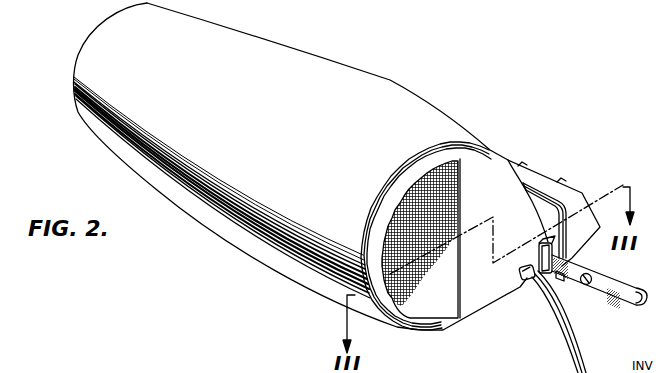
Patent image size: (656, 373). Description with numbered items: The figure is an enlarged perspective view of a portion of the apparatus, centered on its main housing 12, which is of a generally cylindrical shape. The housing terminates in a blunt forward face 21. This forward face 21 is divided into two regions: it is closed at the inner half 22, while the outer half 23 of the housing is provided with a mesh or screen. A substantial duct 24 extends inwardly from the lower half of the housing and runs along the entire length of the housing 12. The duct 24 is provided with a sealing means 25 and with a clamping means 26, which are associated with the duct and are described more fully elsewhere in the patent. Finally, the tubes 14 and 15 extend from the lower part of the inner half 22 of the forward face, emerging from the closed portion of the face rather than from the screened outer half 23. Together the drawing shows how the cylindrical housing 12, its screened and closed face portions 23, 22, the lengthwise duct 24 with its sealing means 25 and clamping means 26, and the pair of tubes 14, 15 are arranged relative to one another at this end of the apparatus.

The main housing 12 is at (312, 57).
The tube 14 is at (568, 312).
The tube 15 is at (556, 314).
The blunt forward face 21 is at (475, 293).
The inner half 22 is at (493, 206).
The outer half 23 is at (438, 291).
The duct 24 is at (571, 203).
The sealing means 25 is at (540, 193).
The clamping means 26 is at (608, 286).